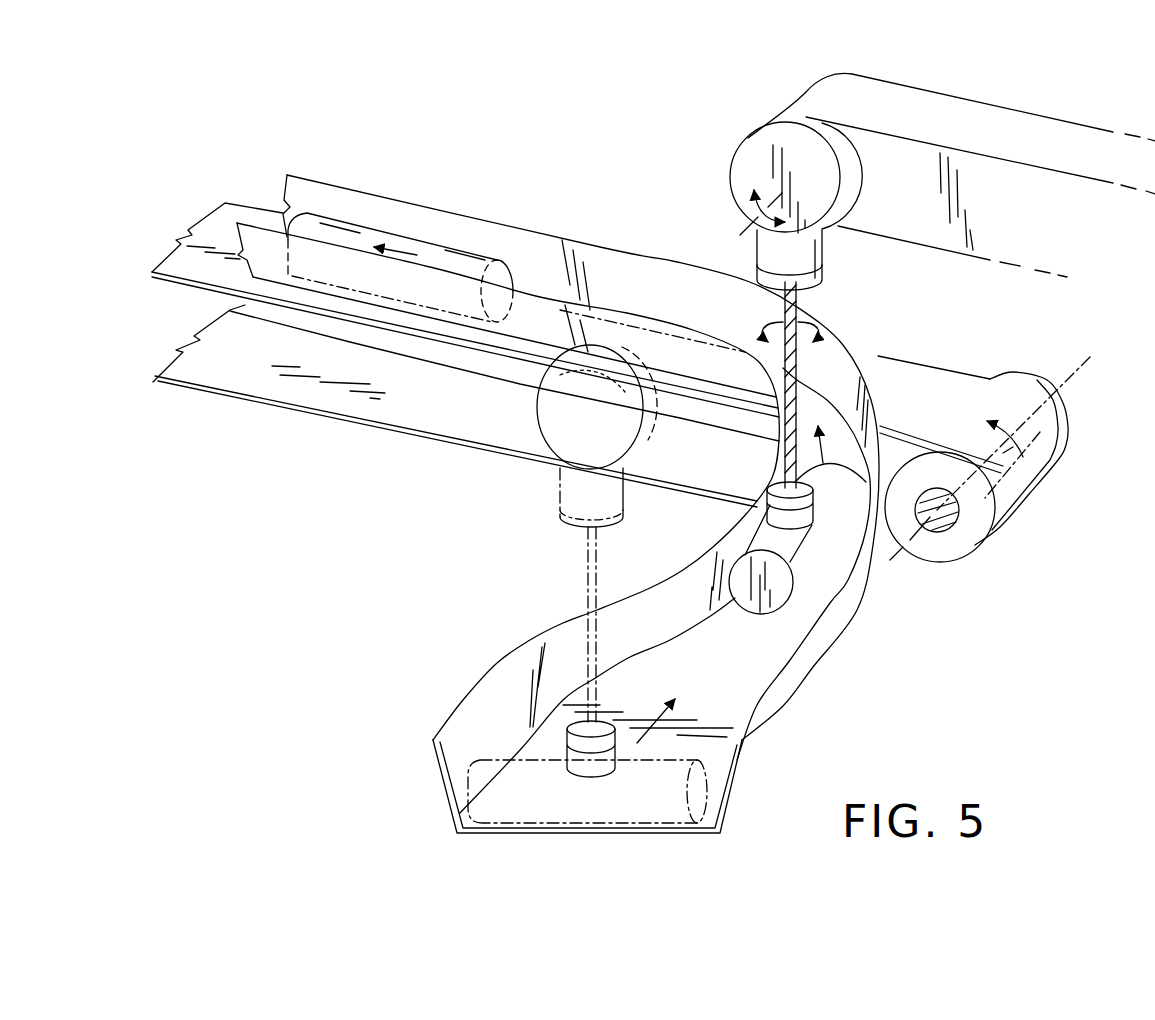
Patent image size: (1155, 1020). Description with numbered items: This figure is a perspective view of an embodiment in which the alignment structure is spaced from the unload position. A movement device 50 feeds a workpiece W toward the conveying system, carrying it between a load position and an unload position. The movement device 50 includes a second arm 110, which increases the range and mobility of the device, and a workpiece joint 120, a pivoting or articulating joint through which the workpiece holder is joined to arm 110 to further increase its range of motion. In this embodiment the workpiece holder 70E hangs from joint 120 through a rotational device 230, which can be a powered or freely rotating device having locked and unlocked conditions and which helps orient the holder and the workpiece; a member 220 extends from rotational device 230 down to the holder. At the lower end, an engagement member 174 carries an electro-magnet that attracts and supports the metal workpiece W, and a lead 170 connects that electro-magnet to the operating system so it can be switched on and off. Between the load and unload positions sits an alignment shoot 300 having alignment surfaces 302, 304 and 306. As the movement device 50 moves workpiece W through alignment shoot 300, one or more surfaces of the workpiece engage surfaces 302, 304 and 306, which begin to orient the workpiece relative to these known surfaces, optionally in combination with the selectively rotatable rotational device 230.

The movement device 50 is at (996, 83).
The second arm 110 is at (1030, 127).
The workpiece joint 120 is at (762, 157).
The rotational device 230 is at (815, 248).
The transfer station 70E is at (836, 306).
The spindle shaft 220 is at (792, 362).
The engagement member 174 is at (782, 510).
The lead 170 is at (777, 487).
The alignment shoot 300 is at (521, 504).
The alignment surface 302 is at (651, 609).
The alignment surface 304 is at (795, 668).
The alignment surface 306 is at (718, 698).
The workpiece W is at (450, 257).